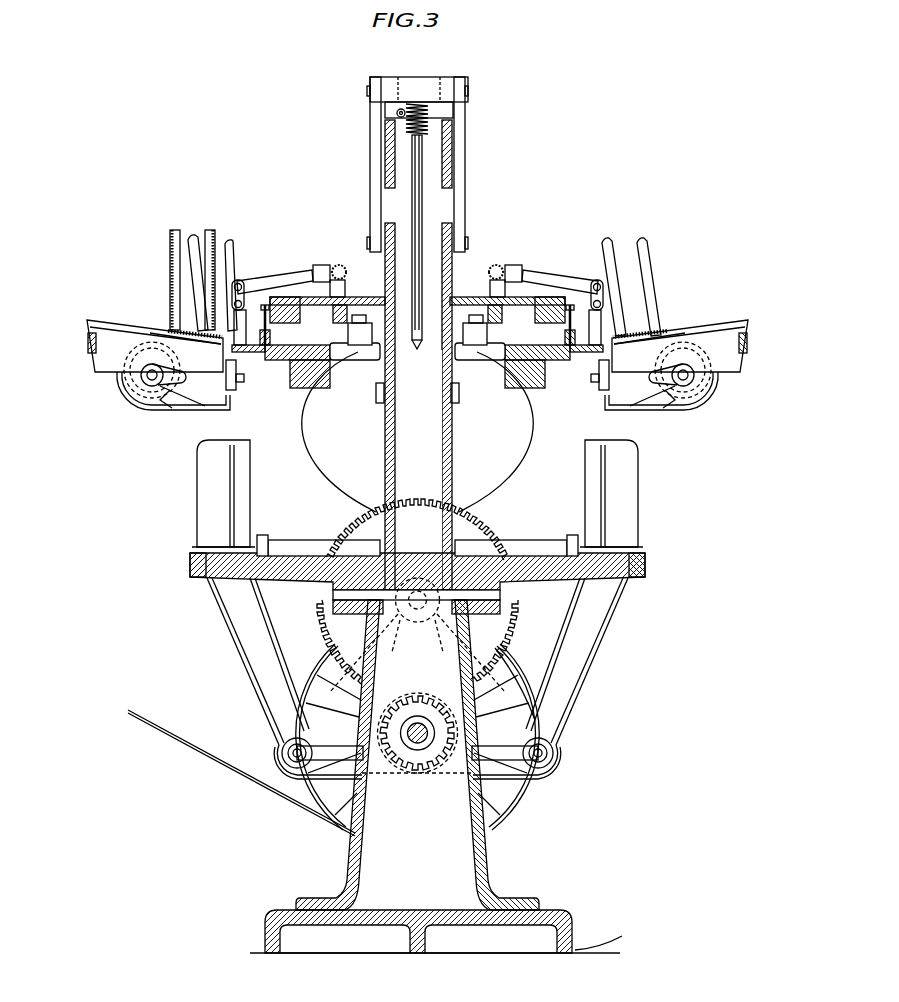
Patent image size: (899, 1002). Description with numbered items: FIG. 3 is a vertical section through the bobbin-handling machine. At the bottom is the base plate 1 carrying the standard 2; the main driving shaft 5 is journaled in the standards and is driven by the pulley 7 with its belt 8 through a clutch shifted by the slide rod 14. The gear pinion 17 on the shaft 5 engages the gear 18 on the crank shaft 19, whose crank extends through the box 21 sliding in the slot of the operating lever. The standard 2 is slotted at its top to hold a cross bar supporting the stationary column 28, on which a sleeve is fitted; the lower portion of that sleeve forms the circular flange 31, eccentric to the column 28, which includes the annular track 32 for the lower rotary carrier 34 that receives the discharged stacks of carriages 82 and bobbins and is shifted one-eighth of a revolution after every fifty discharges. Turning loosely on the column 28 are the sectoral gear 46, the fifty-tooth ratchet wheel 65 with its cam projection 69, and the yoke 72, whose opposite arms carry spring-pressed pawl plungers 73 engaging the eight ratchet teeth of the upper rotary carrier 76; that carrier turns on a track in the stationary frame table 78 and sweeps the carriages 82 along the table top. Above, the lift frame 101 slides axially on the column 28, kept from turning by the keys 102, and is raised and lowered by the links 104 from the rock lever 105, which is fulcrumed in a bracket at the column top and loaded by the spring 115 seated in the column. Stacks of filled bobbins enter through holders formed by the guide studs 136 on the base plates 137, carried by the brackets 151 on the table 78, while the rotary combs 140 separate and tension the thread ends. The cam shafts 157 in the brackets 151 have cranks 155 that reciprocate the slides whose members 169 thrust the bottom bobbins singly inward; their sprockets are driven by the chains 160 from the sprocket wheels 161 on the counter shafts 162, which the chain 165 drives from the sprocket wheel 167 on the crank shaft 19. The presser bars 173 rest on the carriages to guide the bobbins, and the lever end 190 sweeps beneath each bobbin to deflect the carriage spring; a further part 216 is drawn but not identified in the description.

The base plate 1 is at (571, 916).
The standard 2 is at (417, 755).
The main driving shaft 5 is at (426, 752).
The pulley 7 is at (524, 792).
The belt 8 is at (192, 746).
The slide rod 14 is at (400, 112).
The gear pinion 17 is at (395, 776).
The gear 18 is at (470, 506).
The crank shaft 19 is at (417, 642).
The box 21 is at (445, 612).
The column 28 is at (419, 470).
The circular flange 31 is at (196, 570).
The annular track 32 is at (648, 558).
The lower rotary carrier 34 is at (577, 545).
The sectoral gear 46 is at (460, 388).
The ratchet wheel 65 is at (380, 403).
The cam projection 69 is at (461, 402).
The yoke 72 is at (339, 432).
The pawl plunger 73 is at (346, 322).
The rotary carrier 76 is at (385, 437).
The stationary frame table 78 is at (300, 390).
The carriage 82 is at (240, 368).
The lift frame 101 is at (347, 290).
The keys 102 is at (417, 350).
The links 104 is at (376, 214).
The rock lever 105 is at (438, 86).
The spring 115 is at (406, 112).
The guide studs 136 is at (232, 252).
The base plates 137 is at (177, 327).
The rotary combs 140 is at (170, 253).
The brackets 151 is at (96, 326).
The cranks 155 is at (230, 396).
The cam shafts 157 is at (149, 373).
The chains 160 is at (242, 650).
The sprocket wheels 161 is at (291, 768).
The counter shafts 162 is at (287, 752).
The chain 165 is at (522, 682).
The sprocket wheel 167 is at (432, 632).
The members 169 is at (160, 335).
The presser bar 173 is at (270, 330).
The lever end 190 is at (228, 402).
The bracket 216 is at (200, 412).